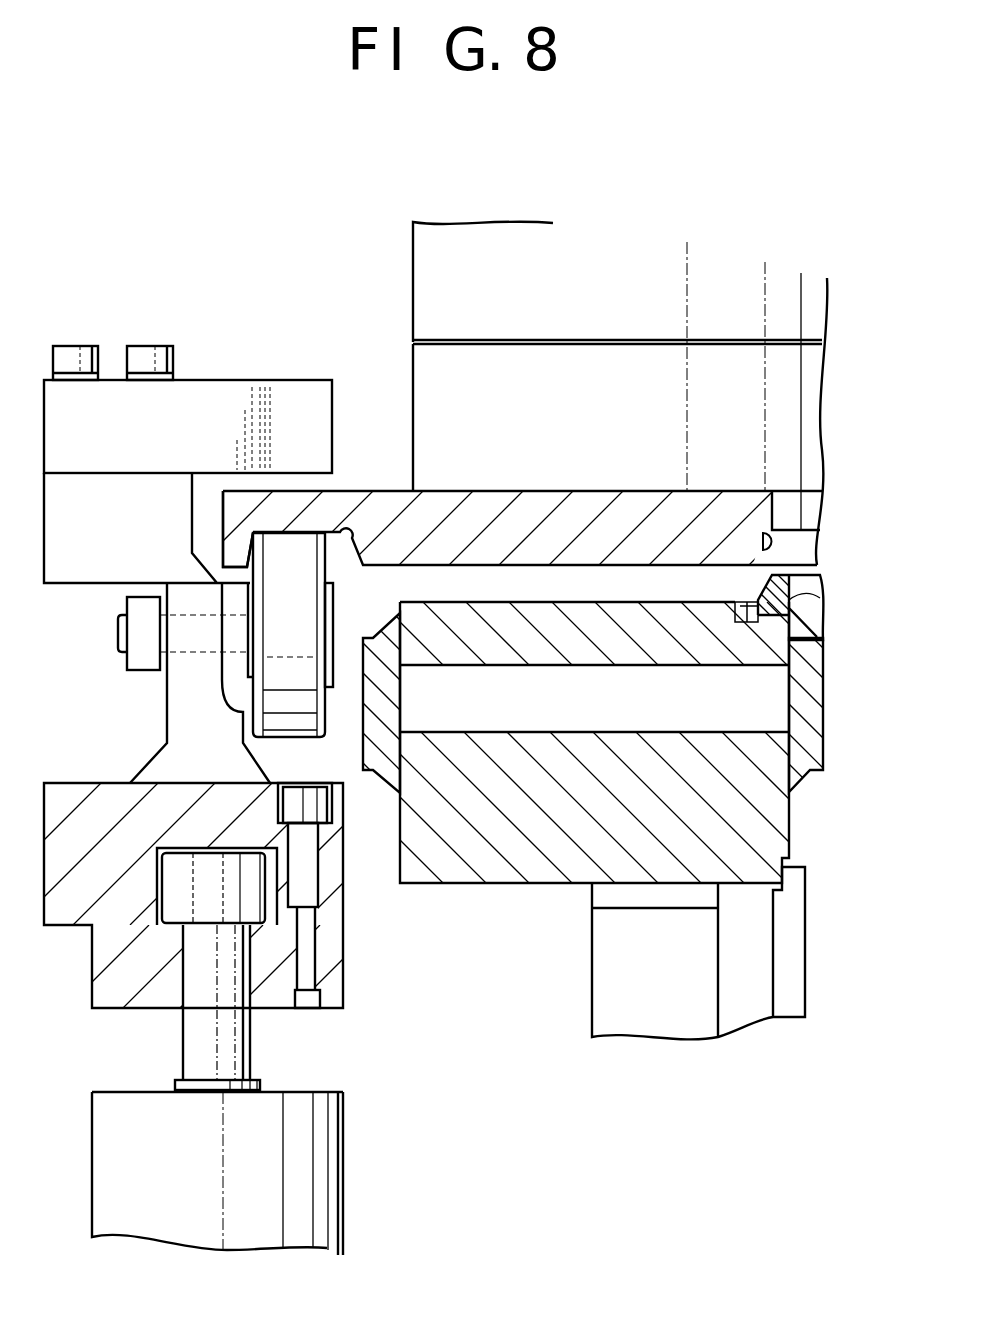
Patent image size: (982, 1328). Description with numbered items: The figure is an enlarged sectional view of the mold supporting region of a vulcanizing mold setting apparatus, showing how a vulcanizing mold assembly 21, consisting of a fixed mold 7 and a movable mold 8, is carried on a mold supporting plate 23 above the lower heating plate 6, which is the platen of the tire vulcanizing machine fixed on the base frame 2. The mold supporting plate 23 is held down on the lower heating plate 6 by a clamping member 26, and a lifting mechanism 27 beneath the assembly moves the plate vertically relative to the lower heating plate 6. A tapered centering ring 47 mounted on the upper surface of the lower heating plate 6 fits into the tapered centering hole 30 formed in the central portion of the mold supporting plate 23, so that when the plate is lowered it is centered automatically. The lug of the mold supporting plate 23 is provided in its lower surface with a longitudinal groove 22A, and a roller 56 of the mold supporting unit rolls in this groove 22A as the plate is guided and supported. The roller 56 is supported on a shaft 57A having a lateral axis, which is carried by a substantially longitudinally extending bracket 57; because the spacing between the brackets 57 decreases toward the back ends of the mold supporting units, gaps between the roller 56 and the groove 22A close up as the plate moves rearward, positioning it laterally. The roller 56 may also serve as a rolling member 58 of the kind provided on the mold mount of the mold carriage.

The base frame 2 is at (603, 983).
The lower heating plate 6 is at (460, 868).
The fixed mold 7 is at (788, 377).
The movable mold 8 is at (423, 262).
The vulcanizing mold assembly 21 is at (396, 307).
The longitudinal groove 22A is at (356, 533).
The mold supporting plate 23 is at (523, 497).
The clamping member 26 is at (318, 395).
The lifting mechanism 27 is at (320, 1183).
The tapered centering hole 30 is at (763, 537).
The tapered centering ring 47 is at (822, 597).
The roller 56 is at (390, 635).
The rolling member 58 is at (315, 705).
The bracket 57 is at (193, 652).
The shaft 57A is at (140, 660).